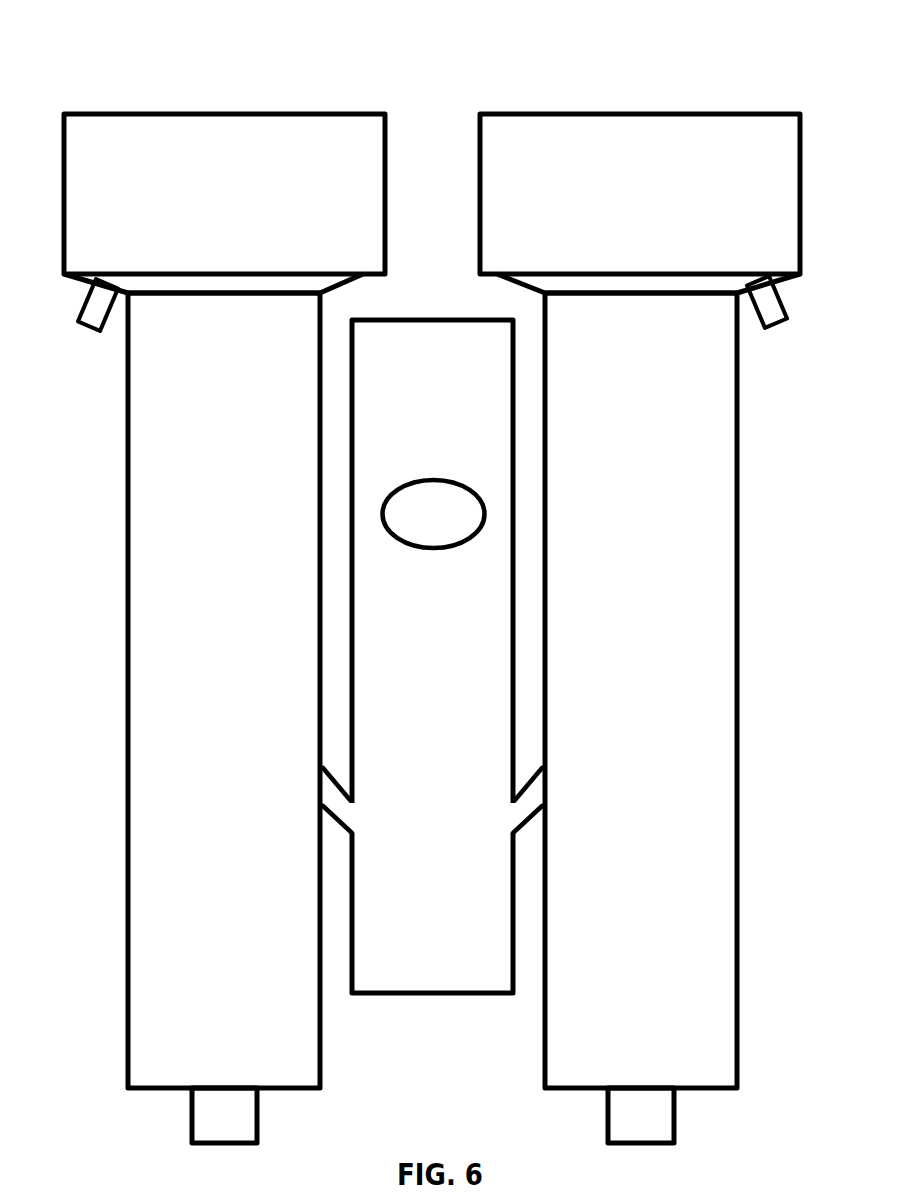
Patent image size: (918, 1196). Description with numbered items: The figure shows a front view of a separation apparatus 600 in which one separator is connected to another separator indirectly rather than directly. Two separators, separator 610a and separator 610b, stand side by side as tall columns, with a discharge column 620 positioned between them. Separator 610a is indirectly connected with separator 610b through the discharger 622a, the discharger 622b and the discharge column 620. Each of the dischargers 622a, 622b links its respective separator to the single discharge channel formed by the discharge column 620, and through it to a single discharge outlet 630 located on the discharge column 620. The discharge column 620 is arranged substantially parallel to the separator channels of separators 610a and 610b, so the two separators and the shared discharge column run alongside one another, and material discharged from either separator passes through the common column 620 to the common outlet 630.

The separation apparatus 600 is at (101, 57).
The separator 610a is at (252, 627).
The separator 610b is at (668, 627).
The discharge column 620 is at (452, 634).
The discharger 622a is at (322, 806).
The discharger 622b is at (543, 806).
The discharge outlet 630 is at (452, 524).